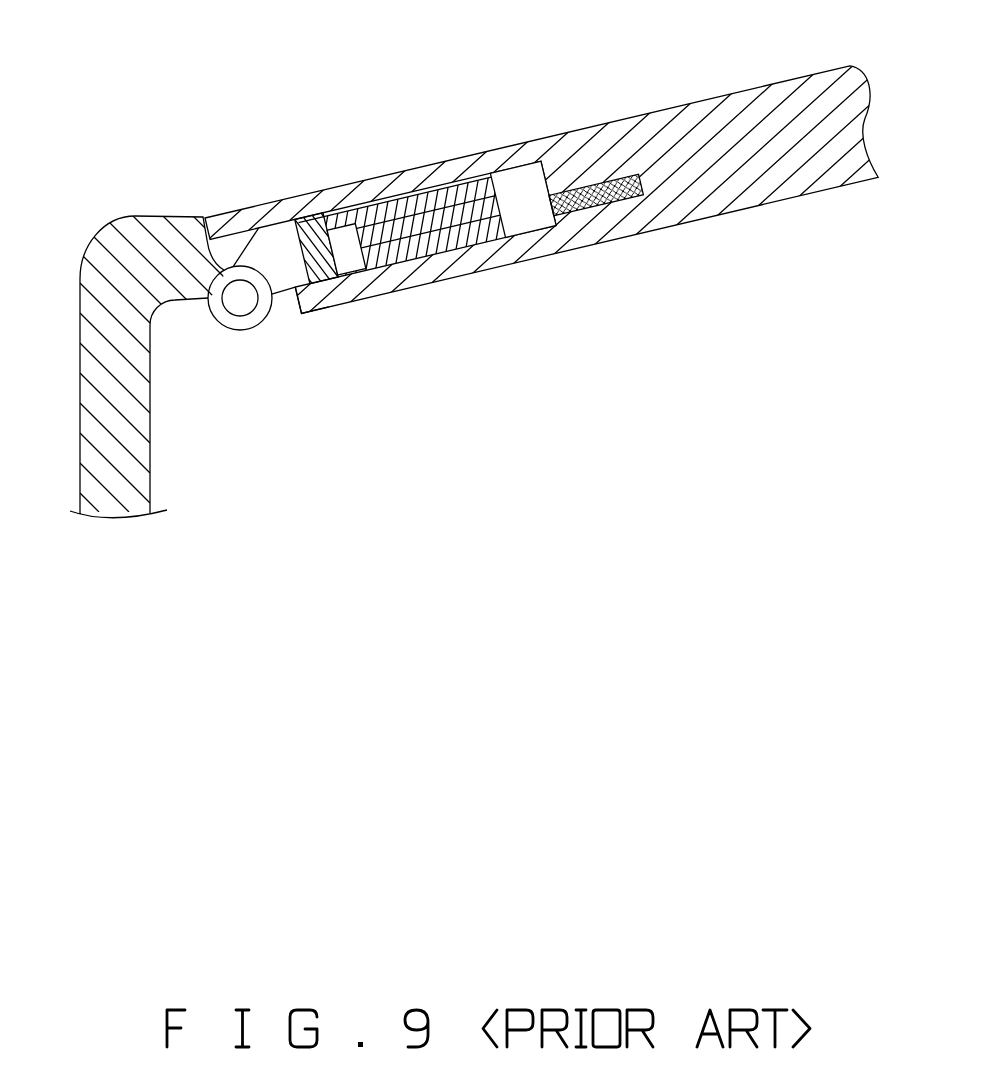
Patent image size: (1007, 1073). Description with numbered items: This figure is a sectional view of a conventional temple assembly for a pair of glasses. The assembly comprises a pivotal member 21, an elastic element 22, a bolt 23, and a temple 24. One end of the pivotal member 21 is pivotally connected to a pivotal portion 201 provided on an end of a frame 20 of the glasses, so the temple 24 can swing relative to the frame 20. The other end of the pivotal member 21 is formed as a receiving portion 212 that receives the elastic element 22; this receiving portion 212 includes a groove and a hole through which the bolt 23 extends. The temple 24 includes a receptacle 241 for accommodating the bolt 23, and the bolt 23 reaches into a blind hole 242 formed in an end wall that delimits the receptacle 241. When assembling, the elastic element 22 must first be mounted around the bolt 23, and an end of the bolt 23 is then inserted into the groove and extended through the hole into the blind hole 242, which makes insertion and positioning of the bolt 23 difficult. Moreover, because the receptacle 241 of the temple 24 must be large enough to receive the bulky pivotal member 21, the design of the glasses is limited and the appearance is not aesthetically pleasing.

The frame 20 is at (130, 218).
The pivotal portion 201 is at (238, 316).
The pivotal member 21 is at (408, 192).
The receiving portion 212 is at (343, 243).
The elastic element 22 is at (455, 240).
The bolt 23 is at (513, 217).
The temple 24 is at (516, 263).
The receptacle 241 is at (314, 295).
The blind hole 242 is at (607, 205).